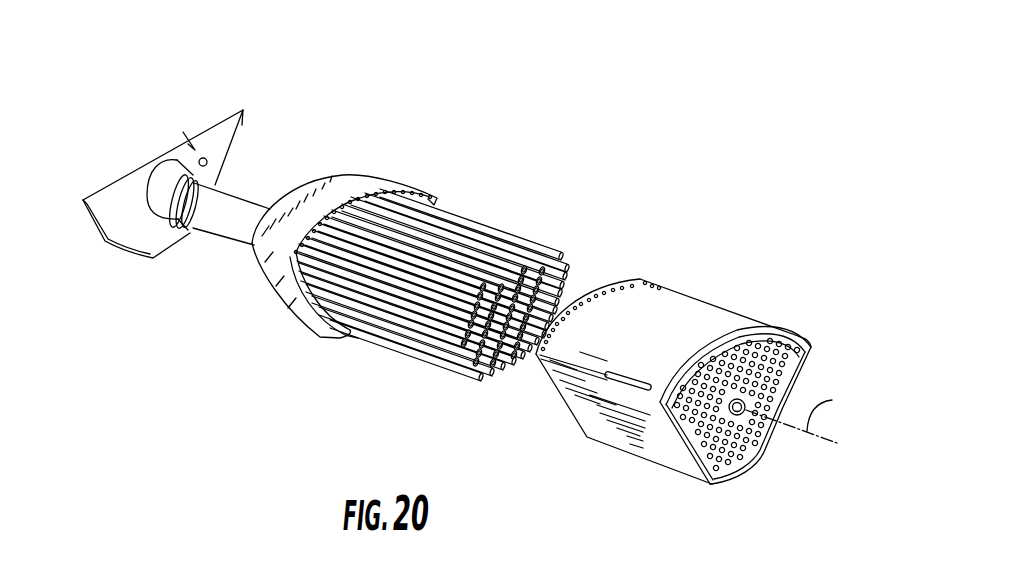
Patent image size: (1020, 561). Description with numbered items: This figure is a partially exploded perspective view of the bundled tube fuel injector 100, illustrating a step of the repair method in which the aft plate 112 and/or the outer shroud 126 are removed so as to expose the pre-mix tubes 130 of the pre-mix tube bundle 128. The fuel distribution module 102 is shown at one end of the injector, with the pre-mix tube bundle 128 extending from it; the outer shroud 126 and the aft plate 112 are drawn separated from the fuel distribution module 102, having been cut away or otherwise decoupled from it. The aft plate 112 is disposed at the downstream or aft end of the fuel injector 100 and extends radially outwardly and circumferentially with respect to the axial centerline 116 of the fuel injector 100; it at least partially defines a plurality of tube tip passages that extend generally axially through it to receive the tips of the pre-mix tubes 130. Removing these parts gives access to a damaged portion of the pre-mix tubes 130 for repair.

The bundled tube fuel injector 100 is at (517, 98).
The fuel distribution module 102 is at (272, 330).
The aft plate 112 is at (811, 347).
The axial centerline 116 is at (793, 428).
The outer shroud 126 is at (694, 300).
The pre-mix tube bundle 128 is at (405, 367).
The pre-mix tubes 130 is at (525, 238).